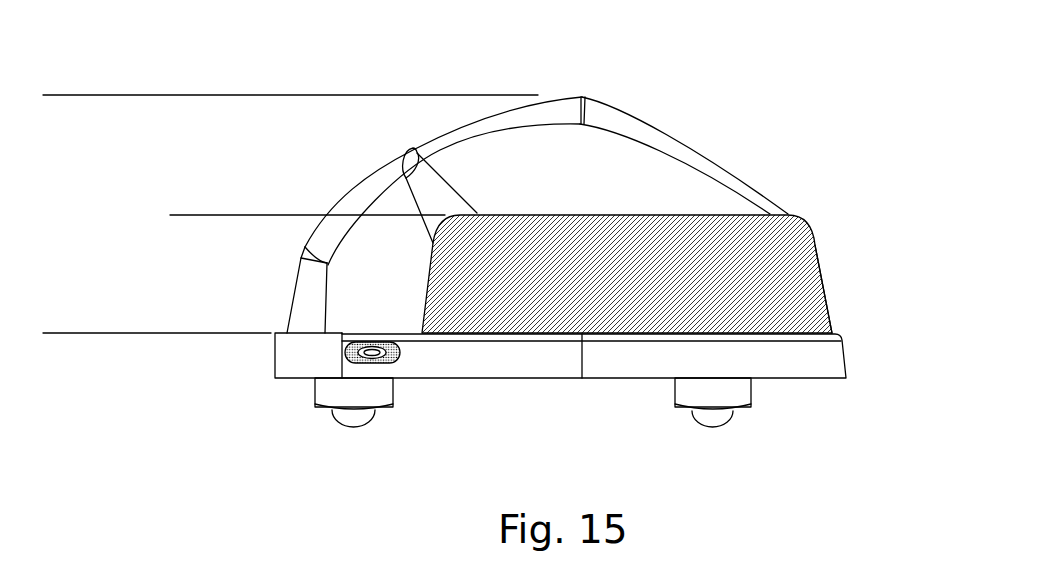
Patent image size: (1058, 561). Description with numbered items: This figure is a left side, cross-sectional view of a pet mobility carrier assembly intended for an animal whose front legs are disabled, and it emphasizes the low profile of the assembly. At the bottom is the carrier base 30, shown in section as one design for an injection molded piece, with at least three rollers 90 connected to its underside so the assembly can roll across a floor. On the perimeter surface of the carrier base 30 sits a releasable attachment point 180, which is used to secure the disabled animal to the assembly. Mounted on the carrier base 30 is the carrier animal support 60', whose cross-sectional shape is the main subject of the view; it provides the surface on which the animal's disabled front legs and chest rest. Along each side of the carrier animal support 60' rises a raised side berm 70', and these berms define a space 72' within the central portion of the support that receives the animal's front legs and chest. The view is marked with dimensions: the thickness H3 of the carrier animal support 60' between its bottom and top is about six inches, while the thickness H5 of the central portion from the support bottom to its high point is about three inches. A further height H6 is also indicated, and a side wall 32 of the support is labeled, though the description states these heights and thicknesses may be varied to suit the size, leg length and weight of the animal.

The raised side berm 70' is at (537, 189).
The space 72' is at (613, 173).
The carrier animal support 60' is at (669, 263).
The side wall 32 is at (835, 290).
The carrier base 30 is at (290, 380).
The releasable attachment points 180 is at (397, 360).
The rollers 90 is at (728, 420).
The thickness H3 is at (88, 393).
The hoop height above cushion H6 is at (291, 95).
The thickness H5 is at (202, 215).